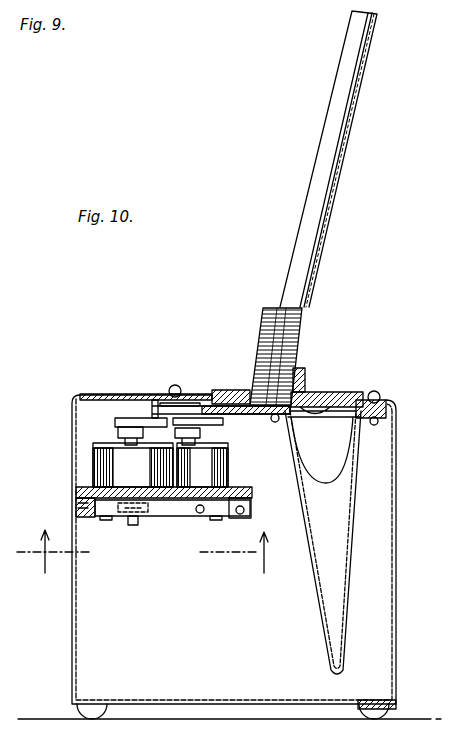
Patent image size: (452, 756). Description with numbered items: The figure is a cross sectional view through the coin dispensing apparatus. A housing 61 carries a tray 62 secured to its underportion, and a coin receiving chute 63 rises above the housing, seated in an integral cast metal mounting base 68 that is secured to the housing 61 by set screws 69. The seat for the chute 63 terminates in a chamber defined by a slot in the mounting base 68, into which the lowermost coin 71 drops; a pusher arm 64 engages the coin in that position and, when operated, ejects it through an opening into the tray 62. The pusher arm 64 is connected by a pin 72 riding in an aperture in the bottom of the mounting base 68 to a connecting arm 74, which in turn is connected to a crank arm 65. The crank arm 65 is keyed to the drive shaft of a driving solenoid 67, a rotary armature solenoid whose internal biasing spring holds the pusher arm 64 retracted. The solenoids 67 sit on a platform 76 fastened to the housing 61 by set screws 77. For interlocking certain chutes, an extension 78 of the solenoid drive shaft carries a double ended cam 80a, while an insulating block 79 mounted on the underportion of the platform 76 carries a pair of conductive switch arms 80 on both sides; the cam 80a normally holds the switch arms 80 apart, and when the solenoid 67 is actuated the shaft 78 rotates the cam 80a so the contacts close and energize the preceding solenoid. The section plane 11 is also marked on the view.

The section plane 11- 11 is at (151, 551).
The housing 61 is at (72, 594).
The tray 62 is at (354, 573).
The coin receiving chute 63 is at (358, 102).
The pusher arm 64 is at (153, 405).
The crank arm 65 is at (113, 432).
The driving solenoid 67 is at (93, 467).
The mounting base 68 is at (305, 372).
The set screw 69 is at (177, 385).
The lowermost coin 71 is at (331, 392).
The pin 72 is at (152, 410).
The connecting arm 74 is at (117, 418).
The platform 76 is at (218, 484).
The set screw 77 is at (76, 505).
The drive shaft extension 78 is at (133, 526).
The insulating block 79 is at (108, 520).
The conductive switch arm 80 is at (176, 518).
The double ended cam 80a is at (118, 513).